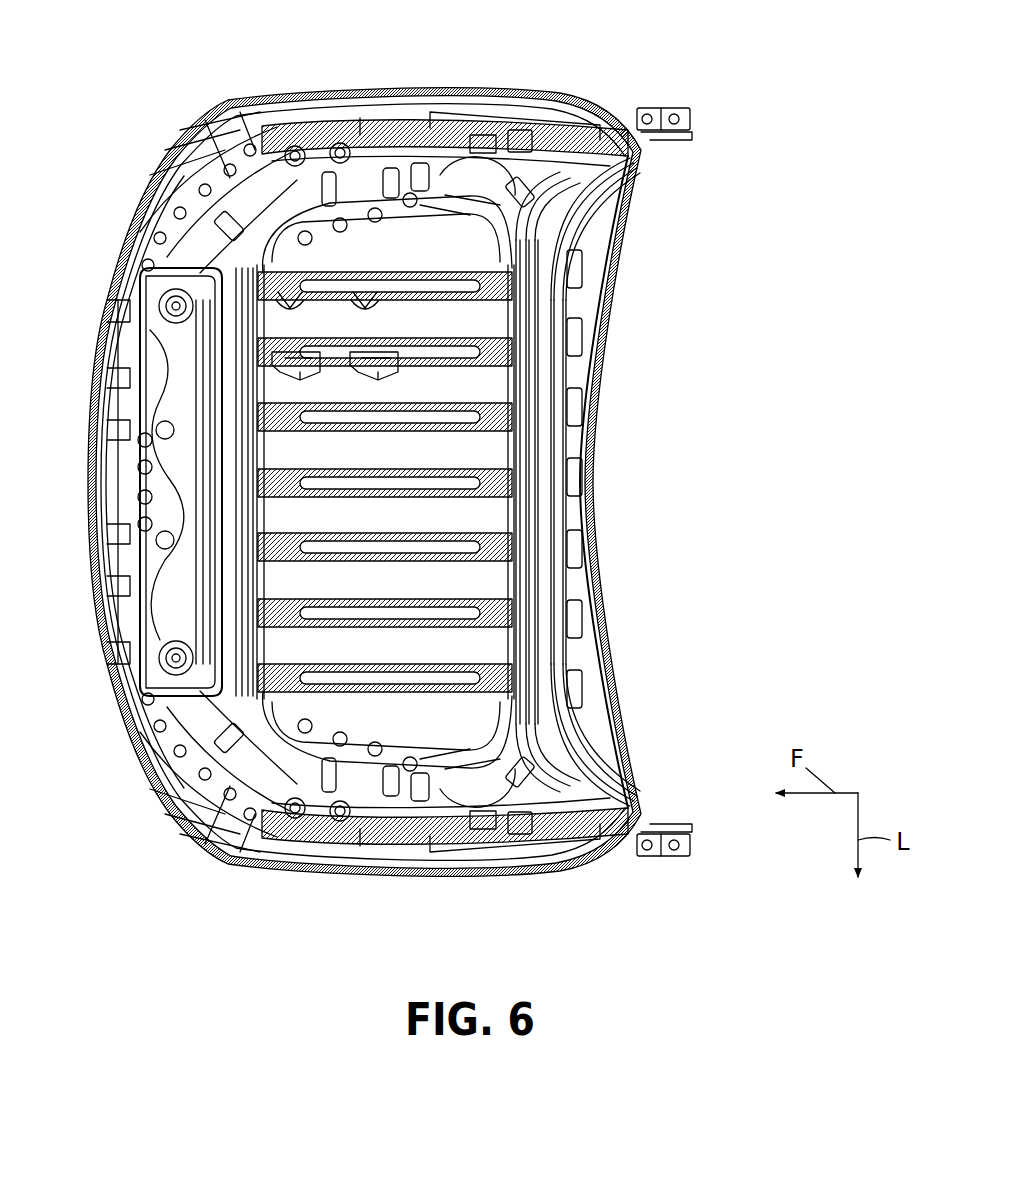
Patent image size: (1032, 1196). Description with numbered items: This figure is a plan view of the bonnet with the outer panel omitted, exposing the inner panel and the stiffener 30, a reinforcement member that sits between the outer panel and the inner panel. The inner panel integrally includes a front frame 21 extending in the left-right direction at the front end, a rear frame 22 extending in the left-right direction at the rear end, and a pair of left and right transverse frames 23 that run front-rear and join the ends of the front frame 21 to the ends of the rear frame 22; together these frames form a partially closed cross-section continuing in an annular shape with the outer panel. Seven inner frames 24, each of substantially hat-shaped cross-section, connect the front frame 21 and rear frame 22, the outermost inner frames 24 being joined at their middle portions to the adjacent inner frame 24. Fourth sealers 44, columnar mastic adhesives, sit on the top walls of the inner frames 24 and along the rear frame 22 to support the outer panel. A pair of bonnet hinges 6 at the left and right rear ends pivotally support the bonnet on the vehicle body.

The bonnet hinge 6 is at (665, 110).
The front frame 21 is at (124, 709).
The rear frame 22 is at (548, 542).
The transverse frame 23 is at (346, 160).
The inner frame 24 is at (453, 272).
The stiffener 30 is at (146, 268).
The fourth sealer 44 is at (335, 348).